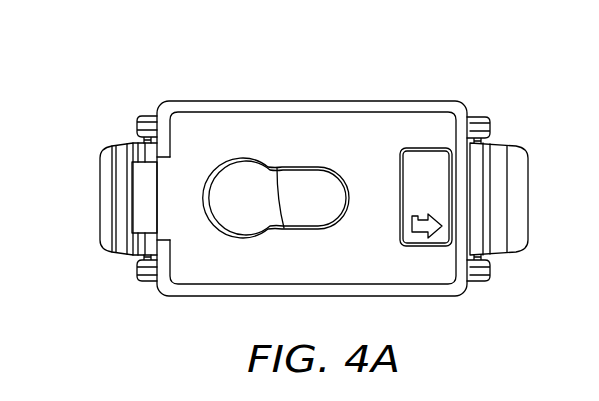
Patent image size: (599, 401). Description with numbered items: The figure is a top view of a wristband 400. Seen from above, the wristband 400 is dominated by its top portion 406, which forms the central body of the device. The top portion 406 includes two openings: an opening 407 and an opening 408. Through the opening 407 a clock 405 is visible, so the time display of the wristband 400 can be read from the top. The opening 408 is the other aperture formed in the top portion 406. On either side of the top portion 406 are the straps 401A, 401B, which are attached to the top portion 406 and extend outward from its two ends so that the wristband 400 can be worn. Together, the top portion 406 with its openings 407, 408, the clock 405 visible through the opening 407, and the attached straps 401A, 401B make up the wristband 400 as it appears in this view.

The wristband 400 is at (308, 178).
The strap 401A is at (79, 170).
The strap 401B is at (538, 170).
The clock 405 is at (432, 240).
The top portion 406 is at (327, 89).
The opening 407 is at (451, 191).
The opening 408 is at (240, 187).